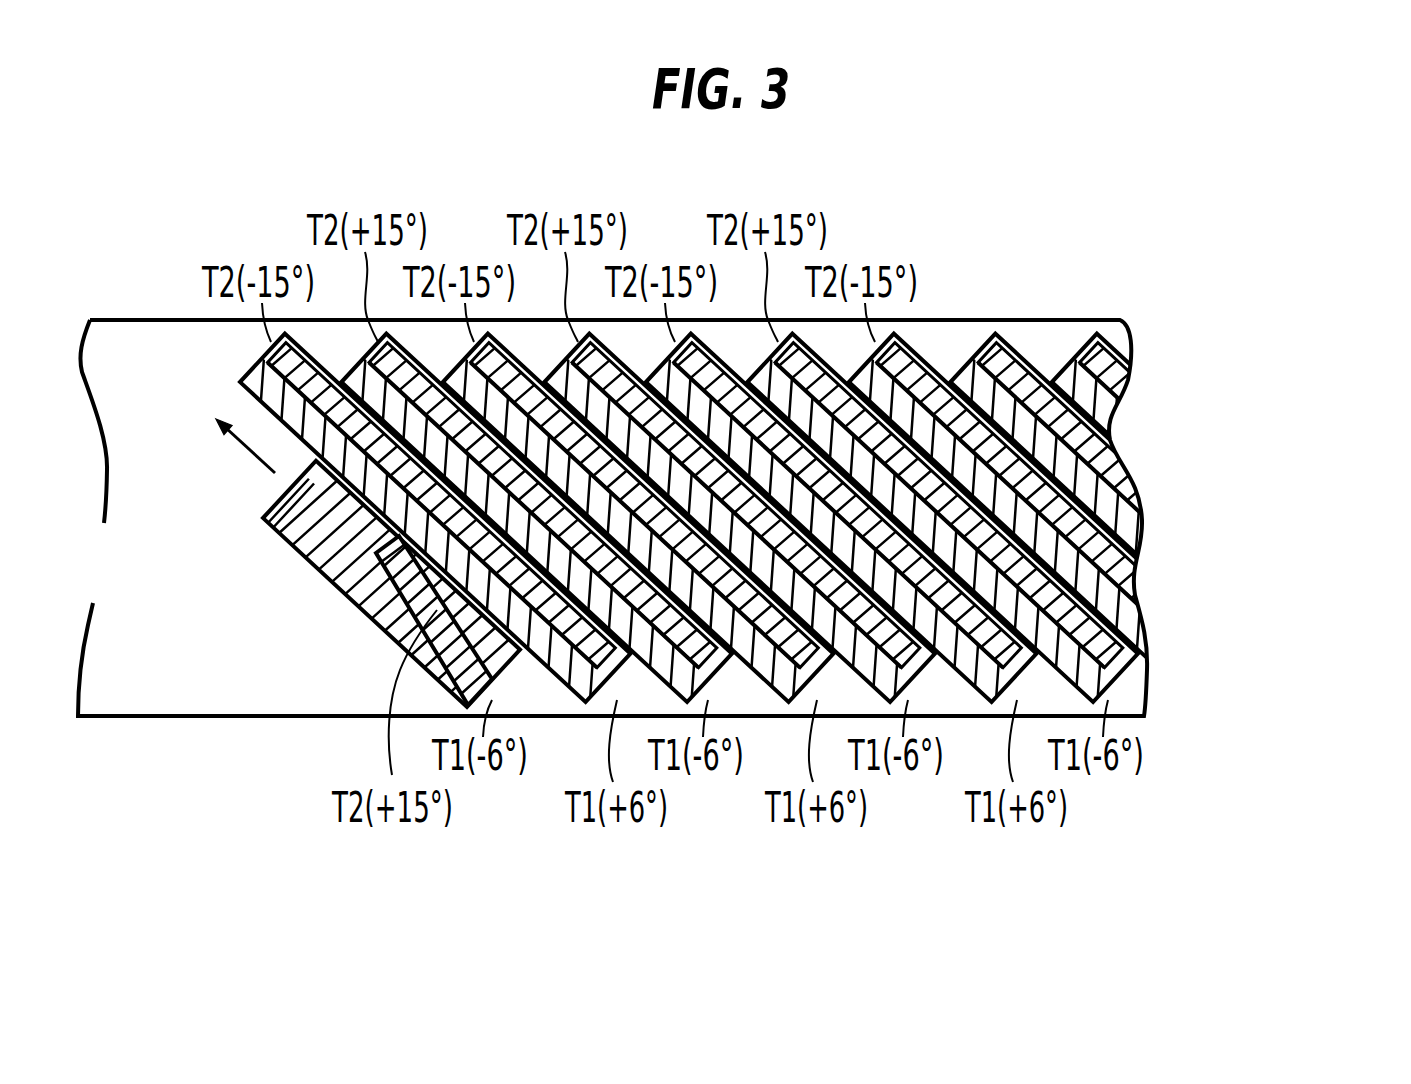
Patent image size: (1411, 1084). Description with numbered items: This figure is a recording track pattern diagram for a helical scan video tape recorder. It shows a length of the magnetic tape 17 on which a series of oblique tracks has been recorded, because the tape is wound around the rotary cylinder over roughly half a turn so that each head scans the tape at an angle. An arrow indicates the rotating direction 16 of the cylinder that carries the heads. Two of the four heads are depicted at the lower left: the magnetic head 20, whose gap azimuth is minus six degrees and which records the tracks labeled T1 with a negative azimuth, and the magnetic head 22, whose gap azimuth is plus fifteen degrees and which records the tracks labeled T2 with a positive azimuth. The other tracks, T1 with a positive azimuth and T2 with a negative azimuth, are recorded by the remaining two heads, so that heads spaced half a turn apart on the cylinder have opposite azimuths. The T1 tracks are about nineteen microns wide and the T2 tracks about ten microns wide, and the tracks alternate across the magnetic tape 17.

The rotating direction 16 is at (255, 455).
The magnetic tape 17 is at (1060, 320).
The magnetic head 20 is at (270, 518).
The magnetic head 22 is at (385, 550).